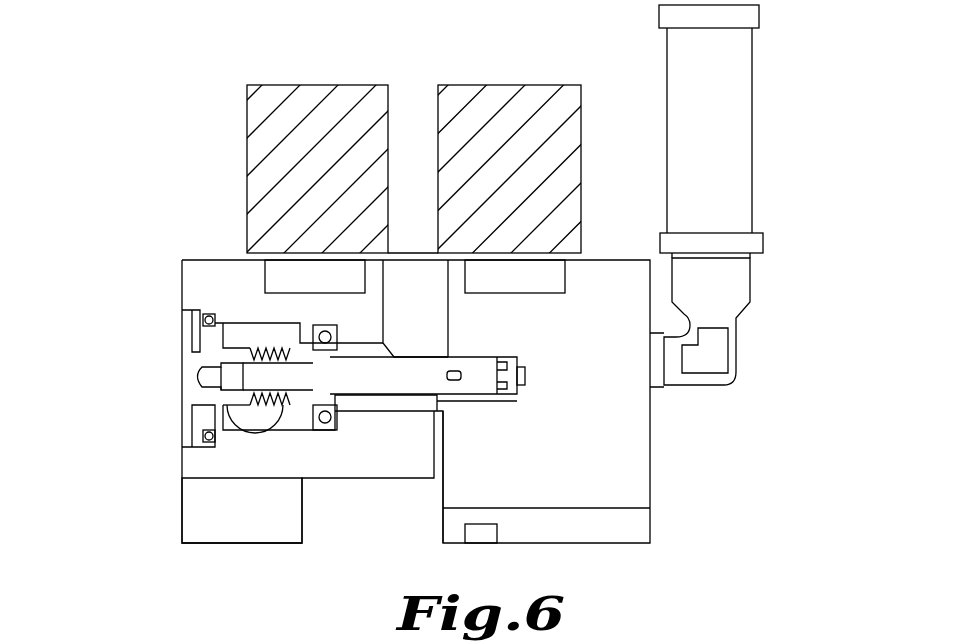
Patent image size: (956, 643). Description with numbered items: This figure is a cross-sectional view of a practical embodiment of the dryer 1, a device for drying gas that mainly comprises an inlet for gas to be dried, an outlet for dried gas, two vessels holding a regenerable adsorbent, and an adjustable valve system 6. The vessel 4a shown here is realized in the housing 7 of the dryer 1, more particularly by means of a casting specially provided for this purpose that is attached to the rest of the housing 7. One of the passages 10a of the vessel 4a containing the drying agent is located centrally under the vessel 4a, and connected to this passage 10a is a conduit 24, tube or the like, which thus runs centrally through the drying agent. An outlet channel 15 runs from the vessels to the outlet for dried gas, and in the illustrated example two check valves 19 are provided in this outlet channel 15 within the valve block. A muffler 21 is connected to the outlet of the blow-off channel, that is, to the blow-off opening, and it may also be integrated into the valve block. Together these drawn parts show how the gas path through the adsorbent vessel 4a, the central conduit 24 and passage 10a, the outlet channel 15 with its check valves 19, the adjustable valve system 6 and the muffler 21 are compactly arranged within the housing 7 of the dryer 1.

The dryer 1 is at (183, 97).
The vessel 4a is at (303, 118).
The adjustable valve system 6 is at (180, 563).
The housing 7 is at (210, 290).
The passage 10a is at (410, 252).
The outlet channel 15 is at (410, 325).
The check valve 19 is at (197, 377).
The muffler 21 is at (743, 152).
The conduit 24 is at (390, 118).